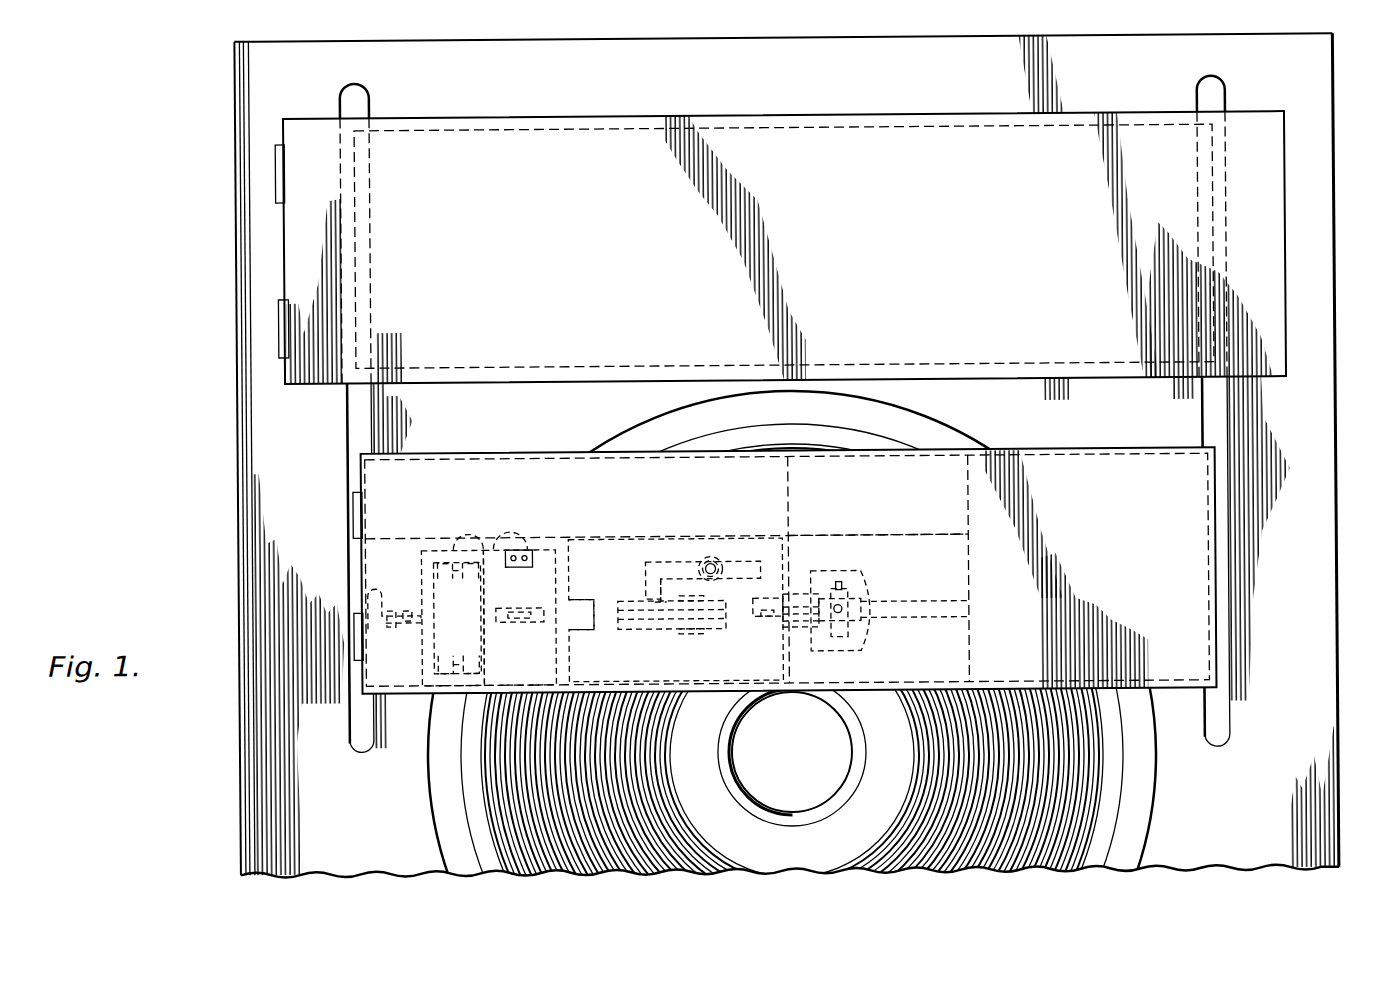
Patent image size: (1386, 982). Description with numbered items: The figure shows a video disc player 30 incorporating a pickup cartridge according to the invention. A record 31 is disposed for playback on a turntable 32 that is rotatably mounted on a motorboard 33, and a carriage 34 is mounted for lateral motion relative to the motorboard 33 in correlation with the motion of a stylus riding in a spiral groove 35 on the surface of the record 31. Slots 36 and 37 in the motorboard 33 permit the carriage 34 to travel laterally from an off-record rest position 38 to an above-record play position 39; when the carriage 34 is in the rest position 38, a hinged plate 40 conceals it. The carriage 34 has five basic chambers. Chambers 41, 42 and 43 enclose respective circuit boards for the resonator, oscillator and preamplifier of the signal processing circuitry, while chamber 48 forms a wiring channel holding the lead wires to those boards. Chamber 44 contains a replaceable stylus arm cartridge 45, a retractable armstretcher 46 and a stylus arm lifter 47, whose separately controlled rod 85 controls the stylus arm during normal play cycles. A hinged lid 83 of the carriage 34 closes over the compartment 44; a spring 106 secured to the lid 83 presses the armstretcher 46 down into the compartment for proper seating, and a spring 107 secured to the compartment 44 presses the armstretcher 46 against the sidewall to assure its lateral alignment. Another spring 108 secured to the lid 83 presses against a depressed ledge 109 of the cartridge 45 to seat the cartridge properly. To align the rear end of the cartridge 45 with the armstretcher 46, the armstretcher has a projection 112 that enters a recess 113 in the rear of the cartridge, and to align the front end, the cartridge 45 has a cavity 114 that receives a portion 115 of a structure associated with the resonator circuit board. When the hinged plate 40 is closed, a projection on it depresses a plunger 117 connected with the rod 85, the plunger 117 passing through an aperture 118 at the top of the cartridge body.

The video disc player 30 is at (226, 352).
The record 31 is at (799, 685).
The turntable 32 is at (1160, 791).
The motorboard 33 is at (1320, 715).
The carriage 34 is at (820, 548).
The spiral groove 35 is at (513, 789).
The slot 36 is at (352, 406).
The slot 37 is at (1220, 419).
The off-record rest position 38 is at (780, 209).
The above-record play position 39 is at (472, 452).
The hinged plate 40 is at (585, 116).
The chamber 41 is at (960, 667).
The chamber 42 is at (821, 570).
The chamber 43 is at (950, 472).
The chamber 44 is at (401, 543).
The stylus arm cartridge 45 is at (694, 584).
The armstretcher 46 is at (514, 592).
The stylus arm lifter 47 is at (744, 565).
The chamber 48 is at (527, 429).
The hinged lid 83 is at (1218, 557).
The rod 85 is at (657, 596).
The spring 106 is at (522, 621).
The spring 107 is at (487, 546).
The spring 108 is at (771, 619).
The depressed ledge 109 is at (752, 618).
The projection 112 is at (572, 620).
The recess 113 is at (600, 626).
The cavity 114 is at (890, 610).
The portion 115 is at (865, 611).
The plunger 117 is at (710, 560).
The aperture 118 is at (700, 570).